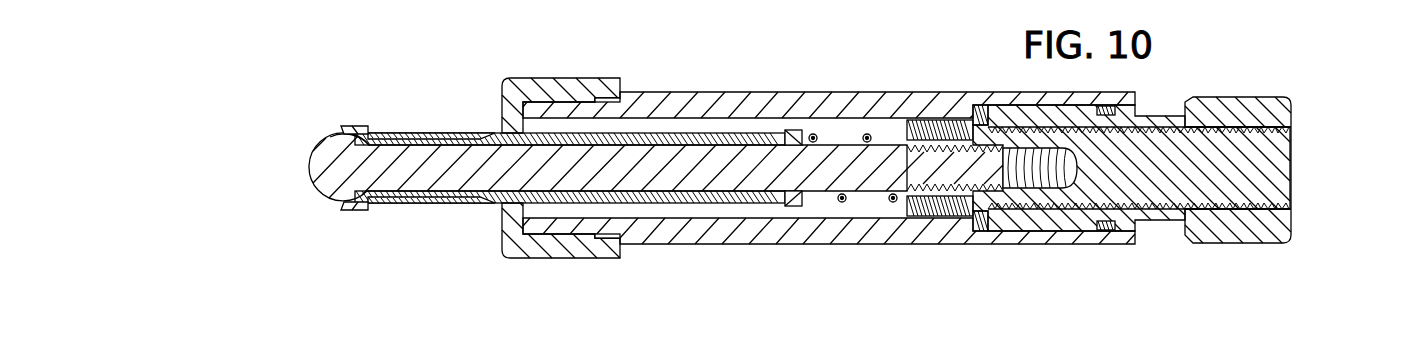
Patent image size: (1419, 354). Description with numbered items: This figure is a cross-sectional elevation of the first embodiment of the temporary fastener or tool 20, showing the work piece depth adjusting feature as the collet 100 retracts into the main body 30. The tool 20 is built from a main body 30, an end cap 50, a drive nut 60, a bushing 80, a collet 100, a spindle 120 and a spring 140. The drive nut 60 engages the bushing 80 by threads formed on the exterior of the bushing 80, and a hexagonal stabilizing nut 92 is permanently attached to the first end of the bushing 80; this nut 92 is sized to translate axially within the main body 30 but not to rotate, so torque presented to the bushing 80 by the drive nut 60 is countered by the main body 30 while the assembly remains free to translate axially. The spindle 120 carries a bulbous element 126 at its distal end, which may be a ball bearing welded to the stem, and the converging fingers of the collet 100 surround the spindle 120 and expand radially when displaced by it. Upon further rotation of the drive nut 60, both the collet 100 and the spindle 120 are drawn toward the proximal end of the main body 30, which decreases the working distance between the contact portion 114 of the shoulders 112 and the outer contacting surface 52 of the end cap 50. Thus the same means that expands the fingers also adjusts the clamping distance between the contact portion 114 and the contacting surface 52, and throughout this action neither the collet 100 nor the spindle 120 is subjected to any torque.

The tool 20 is at (1169, 277).
The main body 30 is at (794, 86).
The end cap 50 is at (563, 262).
The outer contacting surface 52 is at (501, 108).
The drive nut 60 is at (1268, 88).
The bushing 80 is at (1301, 178).
The hexagonal stabilizing nut 92 is at (922, 118).
The collet 100 is at (664, 124).
The shoulders 112 is at (359, 126).
The contact portion 114 is at (372, 134).
The spindle 120 is at (451, 190).
The bulbous element 126 is at (331, 157).
The spring 140 is at (849, 225).